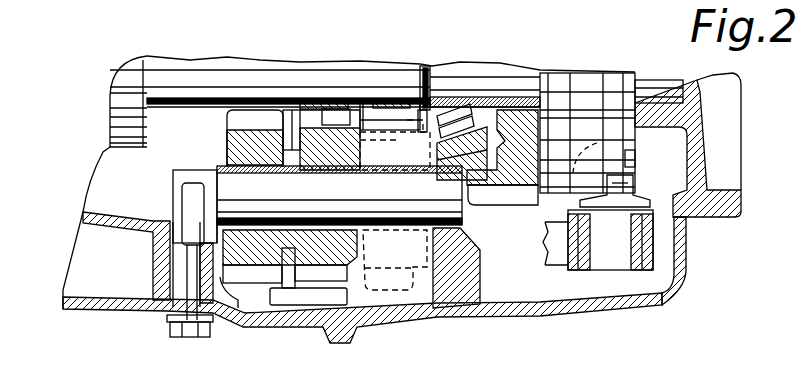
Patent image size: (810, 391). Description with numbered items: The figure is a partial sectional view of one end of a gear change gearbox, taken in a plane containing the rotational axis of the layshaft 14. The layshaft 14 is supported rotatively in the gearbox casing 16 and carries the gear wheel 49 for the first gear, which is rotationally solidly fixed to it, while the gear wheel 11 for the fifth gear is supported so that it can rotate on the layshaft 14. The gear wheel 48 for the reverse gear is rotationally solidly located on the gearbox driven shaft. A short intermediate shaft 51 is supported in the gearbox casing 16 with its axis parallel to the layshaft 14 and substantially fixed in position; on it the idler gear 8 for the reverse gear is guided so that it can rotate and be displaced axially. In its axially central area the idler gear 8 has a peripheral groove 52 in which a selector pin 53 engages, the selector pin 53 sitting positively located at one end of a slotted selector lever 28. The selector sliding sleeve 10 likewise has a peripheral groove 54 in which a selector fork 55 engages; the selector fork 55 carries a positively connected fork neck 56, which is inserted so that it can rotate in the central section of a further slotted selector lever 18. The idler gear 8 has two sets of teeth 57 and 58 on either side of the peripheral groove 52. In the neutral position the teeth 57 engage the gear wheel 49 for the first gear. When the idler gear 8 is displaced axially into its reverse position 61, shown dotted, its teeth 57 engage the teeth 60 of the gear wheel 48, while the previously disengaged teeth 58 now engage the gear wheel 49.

The idler gear 8 is at (240, 292).
The selector sliding sleeve 10 is at (640, 172).
The gear wheel for the fifth gear 11 is at (508, 212).
The layshaft 14 is at (185, 66).
The gearbox casing 16 is at (555, 322).
The further slotted selector lever 18 is at (661, 259).
The slotted selector lever 28 is at (327, 300).
The gear wheel for the reverse gear 48 is at (392, 140).
The gear wheel for the first gear 49 is at (320, 100).
The intermediate shaft 51 is at (253, 192).
The peripheral groove 52 is at (291, 172).
The selector pin 53 is at (280, 275).
The peripheral groove 54 is at (613, 110).
The selector fork 55 is at (636, 157).
The fork neck 56 is at (620, 250).
The teeth 57 is at (328, 122).
The teeth 58 is at (248, 118).
The teeth 60 is at (388, 118).
The reverse gear position 61 is at (488, 62).